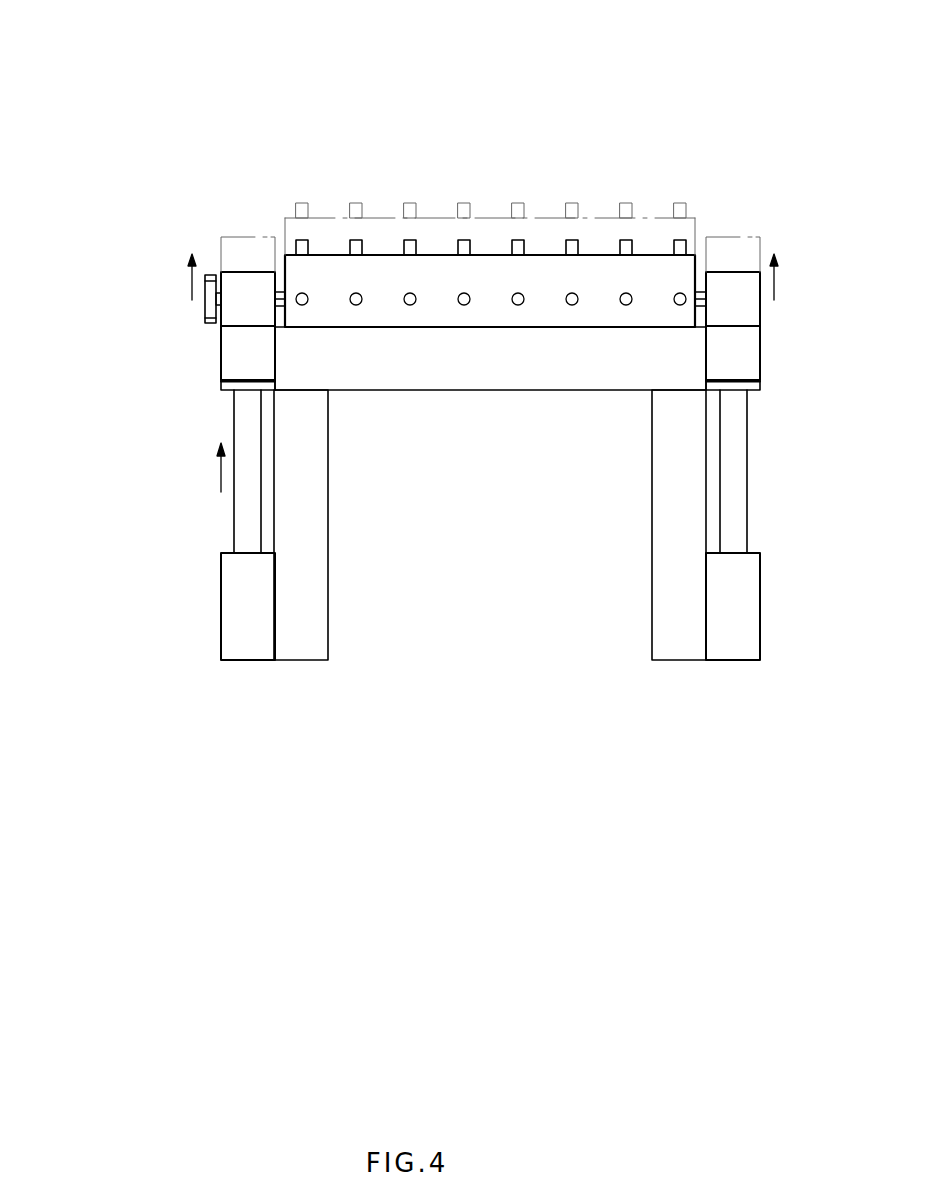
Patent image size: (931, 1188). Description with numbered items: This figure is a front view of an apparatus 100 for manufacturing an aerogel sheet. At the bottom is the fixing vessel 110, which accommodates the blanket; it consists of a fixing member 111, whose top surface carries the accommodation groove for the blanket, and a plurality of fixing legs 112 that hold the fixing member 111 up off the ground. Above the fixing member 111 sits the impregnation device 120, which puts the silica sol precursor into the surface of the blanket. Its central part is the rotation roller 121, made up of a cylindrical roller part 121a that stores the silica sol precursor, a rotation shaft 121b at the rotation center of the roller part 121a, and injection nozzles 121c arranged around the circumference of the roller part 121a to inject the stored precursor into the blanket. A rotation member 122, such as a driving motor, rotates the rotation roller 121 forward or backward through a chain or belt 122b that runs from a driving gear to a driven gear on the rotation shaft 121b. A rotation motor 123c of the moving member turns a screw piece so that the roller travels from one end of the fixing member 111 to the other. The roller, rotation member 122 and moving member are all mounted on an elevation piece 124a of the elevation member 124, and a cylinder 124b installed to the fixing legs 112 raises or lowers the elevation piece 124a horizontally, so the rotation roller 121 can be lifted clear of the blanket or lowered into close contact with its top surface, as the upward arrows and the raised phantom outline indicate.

The apparatus of manufacturing an aerogel sheet 100 is at (653, 94).
The fixing vessel 110 is at (413, 453).
The fixing member 111 is at (390, 385).
The fixing legs 112 is at (318, 505).
The impregnation device 120 is at (63, 465).
The rotation roller 121 is at (293, 137).
The roller part 121a is at (442, 255).
The rotation shaft 121b is at (280, 290).
The injection nozzle 121c is at (353, 247).
The rotation member 122 is at (248, 272).
The chain or belt 122b is at (205, 306).
The rotation motor 123c is at (228, 355).
The elevation member 124 is at (110, 387).
The elevation piece 124a is at (227, 387).
The cylinder 124b is at (228, 589).